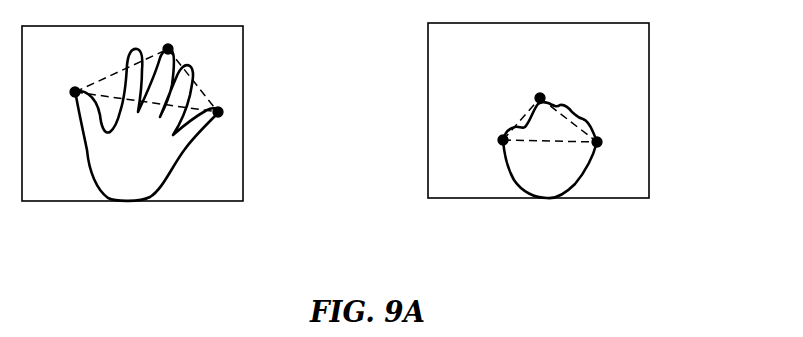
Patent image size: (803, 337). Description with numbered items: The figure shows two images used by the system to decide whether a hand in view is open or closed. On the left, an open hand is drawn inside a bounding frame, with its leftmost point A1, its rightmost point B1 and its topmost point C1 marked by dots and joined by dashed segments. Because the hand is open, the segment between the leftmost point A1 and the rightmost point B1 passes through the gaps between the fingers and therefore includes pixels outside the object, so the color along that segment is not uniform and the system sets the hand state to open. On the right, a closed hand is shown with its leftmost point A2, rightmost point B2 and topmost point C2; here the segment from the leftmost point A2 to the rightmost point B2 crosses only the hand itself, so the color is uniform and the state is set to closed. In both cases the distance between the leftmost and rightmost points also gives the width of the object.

The leftmost point of the open hand A1 is at (75, 92).
The rightmost point of the open hand B1 is at (218, 112).
The topmost point of the open hand C1 is at (168, 49).
The leftmost point of the closed hand A2 is at (503, 140).
The rightmost point of the closed hand B2 is at (597, 142).
The topmost point of the closed hand C2 is at (540, 98).